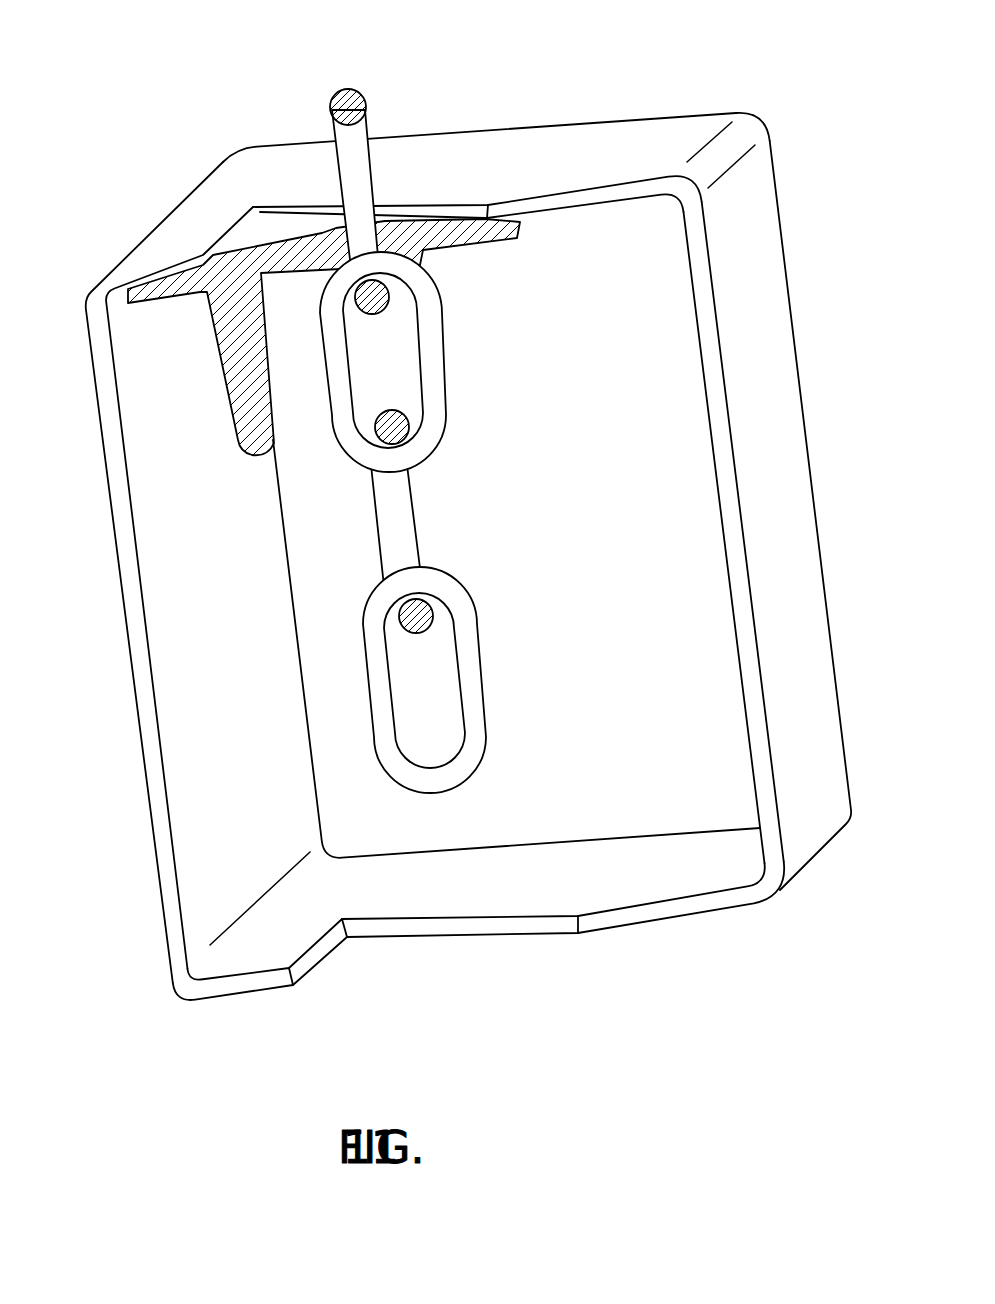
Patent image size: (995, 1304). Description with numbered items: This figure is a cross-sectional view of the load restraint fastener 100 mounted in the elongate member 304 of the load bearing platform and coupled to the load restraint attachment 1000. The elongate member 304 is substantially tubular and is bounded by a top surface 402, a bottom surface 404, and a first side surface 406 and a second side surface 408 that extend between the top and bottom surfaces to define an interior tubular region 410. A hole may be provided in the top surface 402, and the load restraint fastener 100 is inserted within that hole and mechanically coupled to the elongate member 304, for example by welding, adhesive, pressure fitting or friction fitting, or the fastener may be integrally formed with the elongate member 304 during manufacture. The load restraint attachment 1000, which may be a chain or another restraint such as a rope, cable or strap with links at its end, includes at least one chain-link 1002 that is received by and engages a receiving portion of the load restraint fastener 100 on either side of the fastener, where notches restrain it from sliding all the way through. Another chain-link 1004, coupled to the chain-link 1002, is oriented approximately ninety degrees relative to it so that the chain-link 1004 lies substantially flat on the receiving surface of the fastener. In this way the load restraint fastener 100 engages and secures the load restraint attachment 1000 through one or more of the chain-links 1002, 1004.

The load restraint fastener 100 is at (262, 230).
The elongate member 304 is at (245, 999).
The top surface 402 is at (596, 128).
The bottom surface 404 is at (603, 932).
The first side surface 406 is at (152, 817).
The second side surface 408 is at (793, 325).
The interior tubular region 410 is at (642, 740).
The load restraint attachment 1000 is at (416, 397).
The chain-link 1002 is at (442, 377).
The chain-link 1004 is at (325, 118).